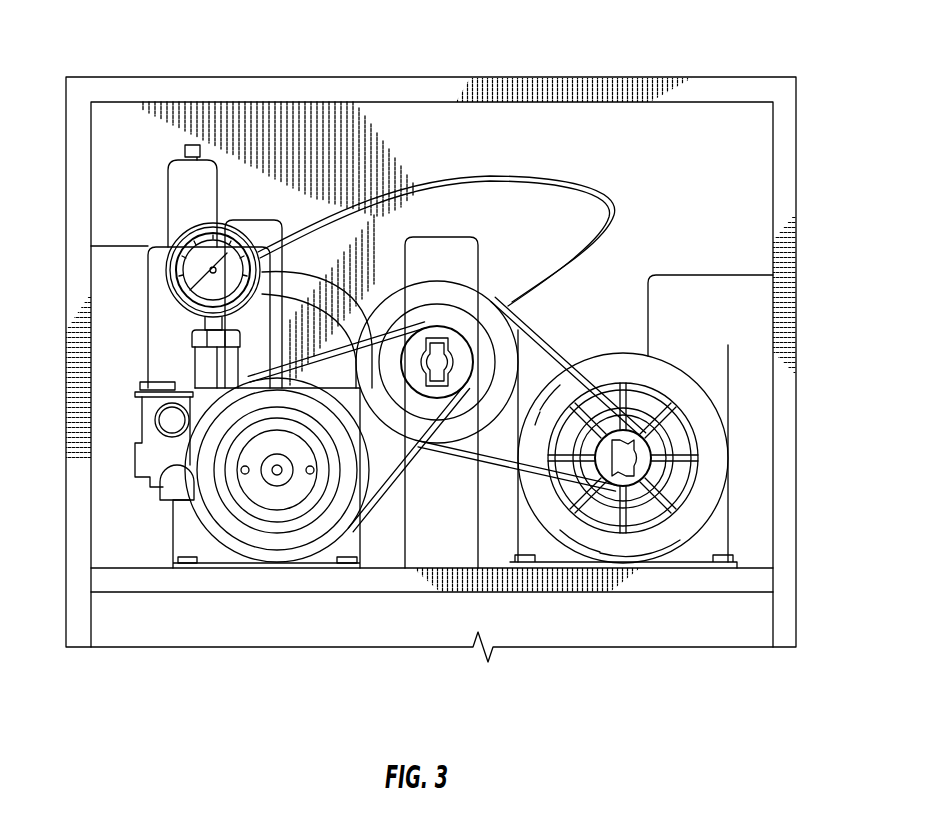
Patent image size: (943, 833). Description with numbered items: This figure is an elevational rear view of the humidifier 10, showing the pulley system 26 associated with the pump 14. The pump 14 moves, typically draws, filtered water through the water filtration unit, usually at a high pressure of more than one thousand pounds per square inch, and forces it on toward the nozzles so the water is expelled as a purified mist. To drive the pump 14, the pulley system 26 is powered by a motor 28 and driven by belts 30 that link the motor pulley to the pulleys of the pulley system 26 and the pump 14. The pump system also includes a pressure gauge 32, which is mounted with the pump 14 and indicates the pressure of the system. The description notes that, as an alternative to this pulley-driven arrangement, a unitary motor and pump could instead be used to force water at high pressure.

The humidifier 10 is at (614, 72).
The pump 14 is at (147, 460).
The pulley system 26 is at (466, 323).
The motor 28 is at (593, 548).
The belts 30 is at (313, 358).
The pressure gauge 32 is at (224, 243).